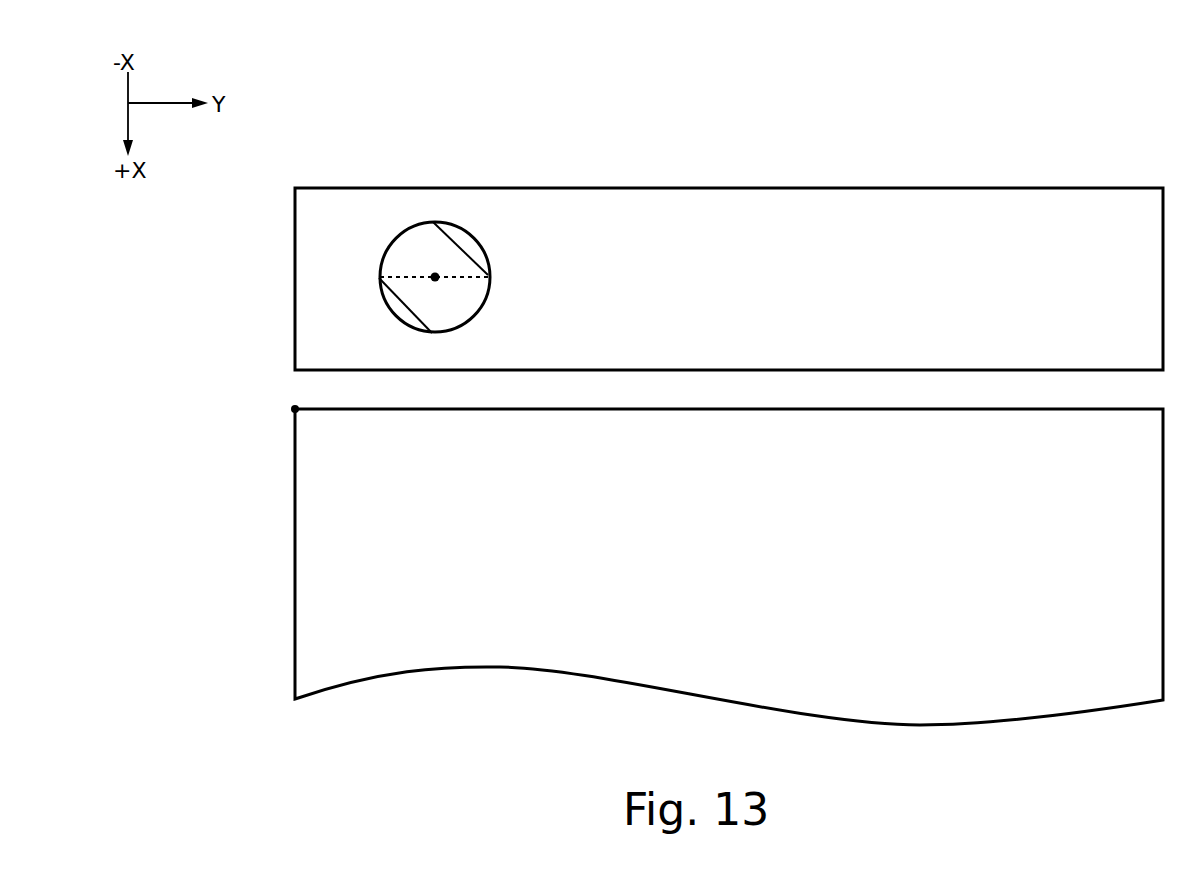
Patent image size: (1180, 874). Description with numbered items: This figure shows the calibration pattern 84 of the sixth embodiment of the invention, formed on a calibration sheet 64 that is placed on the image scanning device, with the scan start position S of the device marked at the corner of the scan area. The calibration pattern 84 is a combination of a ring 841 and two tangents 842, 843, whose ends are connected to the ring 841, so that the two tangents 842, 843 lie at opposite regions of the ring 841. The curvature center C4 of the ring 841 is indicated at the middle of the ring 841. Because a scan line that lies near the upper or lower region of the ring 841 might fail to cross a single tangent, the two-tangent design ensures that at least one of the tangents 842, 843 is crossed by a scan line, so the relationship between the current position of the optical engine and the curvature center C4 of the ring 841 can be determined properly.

The calibration pattern 84 is at (447, 182).
The ring 841 is at (486, 237).
The tangent 842 is at (458, 225).
The tangent 843 is at (400, 277).
The calibration sheet 64 is at (1003, 187).
The curvature center C4 is at (433, 281).
The scan start position S is at (285, 400).